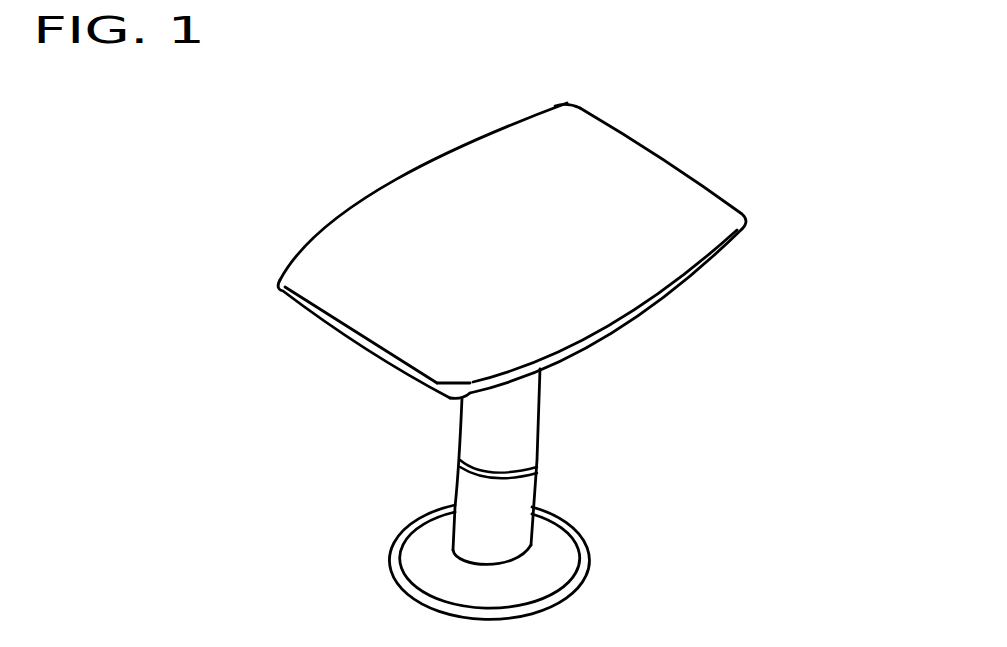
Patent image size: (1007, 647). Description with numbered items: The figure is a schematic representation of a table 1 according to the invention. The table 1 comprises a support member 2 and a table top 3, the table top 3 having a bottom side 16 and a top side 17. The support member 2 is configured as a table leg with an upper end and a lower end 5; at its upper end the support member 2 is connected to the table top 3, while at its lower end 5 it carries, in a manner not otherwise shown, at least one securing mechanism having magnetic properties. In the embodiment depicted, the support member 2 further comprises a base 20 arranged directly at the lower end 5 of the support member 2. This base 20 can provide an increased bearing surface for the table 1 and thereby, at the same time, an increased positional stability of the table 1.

The table 1 is at (396, 140).
The support member 2 is at (520, 452).
The table top 3 is at (641, 205).
The lower end 5 is at (550, 530).
The bottom side 16 is at (691, 290).
The top side 17 is at (602, 103).
The base 20 is at (447, 583).